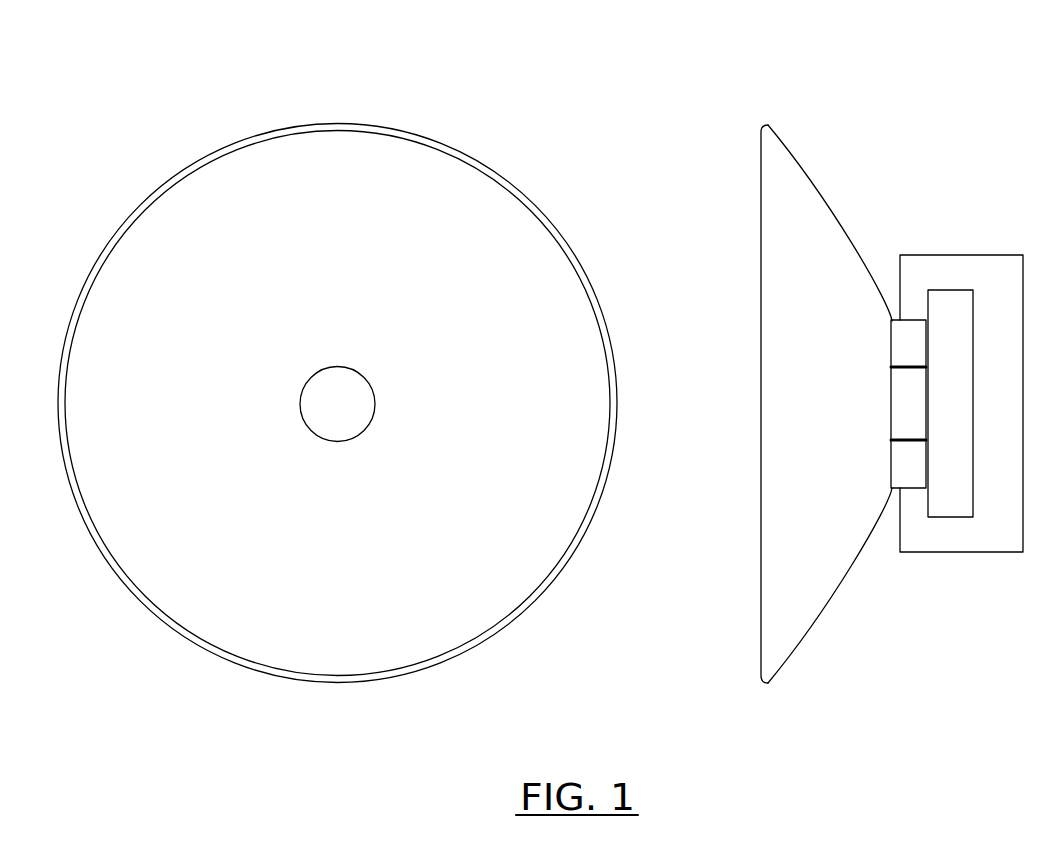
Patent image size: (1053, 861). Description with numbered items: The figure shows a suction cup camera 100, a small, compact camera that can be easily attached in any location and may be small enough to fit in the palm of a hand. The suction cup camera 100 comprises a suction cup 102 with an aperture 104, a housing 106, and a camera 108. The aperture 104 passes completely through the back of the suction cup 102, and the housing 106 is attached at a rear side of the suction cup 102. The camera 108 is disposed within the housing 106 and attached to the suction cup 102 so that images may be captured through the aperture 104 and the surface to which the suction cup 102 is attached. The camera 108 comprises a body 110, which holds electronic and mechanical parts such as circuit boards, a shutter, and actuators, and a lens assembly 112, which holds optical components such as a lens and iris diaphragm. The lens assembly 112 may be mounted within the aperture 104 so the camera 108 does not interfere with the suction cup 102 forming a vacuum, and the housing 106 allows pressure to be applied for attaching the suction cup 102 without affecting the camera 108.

The suction cup camera 100 is at (213, 42).
The suction cup 102 is at (213, 151).
The aperture 104 is at (326, 367).
The housing 106 is at (975, 255).
The camera 108 is at (948, 290).
The body 110 is at (941, 384).
The lens assembly 112 is at (901, 384).